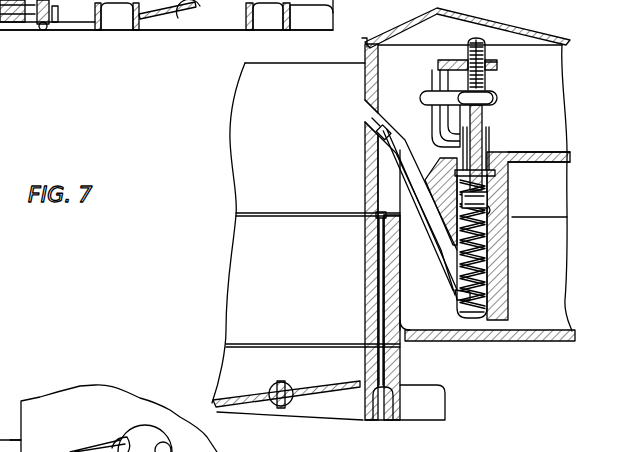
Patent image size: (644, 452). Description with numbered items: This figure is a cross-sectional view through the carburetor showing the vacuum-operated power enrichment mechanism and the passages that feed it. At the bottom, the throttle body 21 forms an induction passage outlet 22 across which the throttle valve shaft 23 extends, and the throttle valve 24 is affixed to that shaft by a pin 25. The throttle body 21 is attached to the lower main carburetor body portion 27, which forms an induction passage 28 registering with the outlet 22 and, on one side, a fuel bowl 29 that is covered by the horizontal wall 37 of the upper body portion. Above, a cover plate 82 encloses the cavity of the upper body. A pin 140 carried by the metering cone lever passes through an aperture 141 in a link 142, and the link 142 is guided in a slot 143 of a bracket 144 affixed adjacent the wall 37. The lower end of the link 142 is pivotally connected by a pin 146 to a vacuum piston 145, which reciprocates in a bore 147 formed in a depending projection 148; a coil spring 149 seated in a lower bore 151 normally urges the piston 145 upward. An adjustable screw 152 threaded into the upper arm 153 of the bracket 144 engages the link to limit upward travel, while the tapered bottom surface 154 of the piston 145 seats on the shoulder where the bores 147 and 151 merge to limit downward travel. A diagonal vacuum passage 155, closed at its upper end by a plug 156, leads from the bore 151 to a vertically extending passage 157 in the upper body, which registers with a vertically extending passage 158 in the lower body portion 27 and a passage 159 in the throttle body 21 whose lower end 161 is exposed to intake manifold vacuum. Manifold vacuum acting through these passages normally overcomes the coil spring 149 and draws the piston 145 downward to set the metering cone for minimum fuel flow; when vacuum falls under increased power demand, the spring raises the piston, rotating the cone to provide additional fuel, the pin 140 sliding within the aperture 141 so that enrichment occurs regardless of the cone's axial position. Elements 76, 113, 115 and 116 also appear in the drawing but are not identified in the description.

The throttle body 21 is at (398, 387).
The induction passage outlet 22 is at (363, 400).
The throttle valve shaft 23 is at (272, 389).
The throttle valve 24 is at (346, 385).
The pin 25 is at (283, 387).
The lower main carburetor body portion 27 is at (545, 317).
The induction passage 28 is at (374, 246).
The fuel bowl 29 is at (566, 297).
The horizontal wall 37 is at (562, 160).
The lever 76 is at (171, 446).
The cover plate 82 is at (526, 18).
The arm 113 is at (32, 444).
The link 115 is at (115, 442).
The pivot 116 is at (145, 432).
The pin 140 is at (497, 97).
The aperture 141 is at (490, 92).
The link 142 is at (485, 112).
The slot 143 is at (488, 131).
The bracket 144 is at (444, 64).
The vacuum piston 145 is at (506, 179).
The pin 146 is at (480, 168).
The bore 147 is at (500, 236).
The depending projection 148 is at (495, 268).
The coil spring 149 is at (495, 220).
The bore 151 is at (495, 287).
The adjustable screw 152 is at (468, 40).
The upper arm 153 is at (498, 64).
The tapered bottom surface 154 is at (490, 203).
The diagonal vacuum passage 155 is at (378, 150).
The plug 156 is at (372, 127).
The vertically extending passage 157 is at (375, 176).
The vertically extending passage 158 is at (382, 222).
The throttle body passage 159 is at (388, 357).
The lower end 161 is at (389, 415).